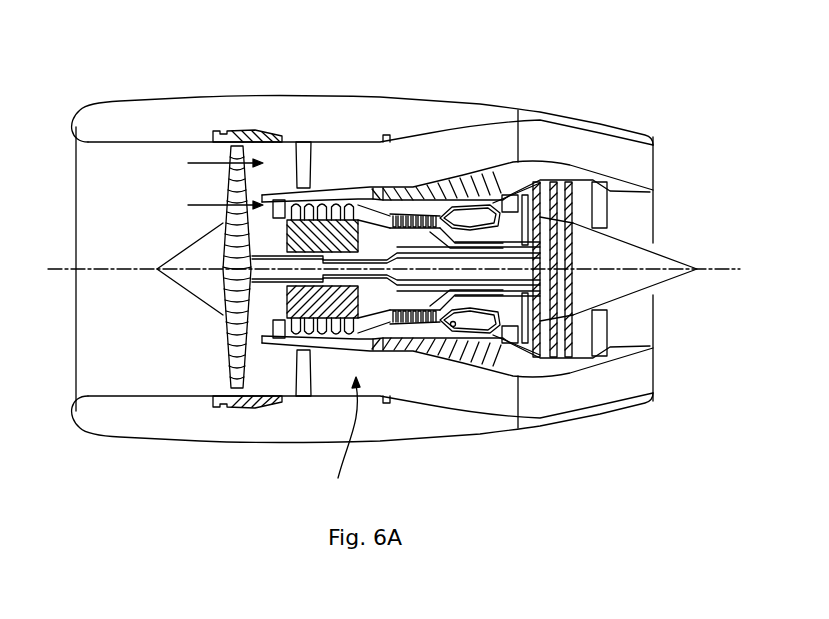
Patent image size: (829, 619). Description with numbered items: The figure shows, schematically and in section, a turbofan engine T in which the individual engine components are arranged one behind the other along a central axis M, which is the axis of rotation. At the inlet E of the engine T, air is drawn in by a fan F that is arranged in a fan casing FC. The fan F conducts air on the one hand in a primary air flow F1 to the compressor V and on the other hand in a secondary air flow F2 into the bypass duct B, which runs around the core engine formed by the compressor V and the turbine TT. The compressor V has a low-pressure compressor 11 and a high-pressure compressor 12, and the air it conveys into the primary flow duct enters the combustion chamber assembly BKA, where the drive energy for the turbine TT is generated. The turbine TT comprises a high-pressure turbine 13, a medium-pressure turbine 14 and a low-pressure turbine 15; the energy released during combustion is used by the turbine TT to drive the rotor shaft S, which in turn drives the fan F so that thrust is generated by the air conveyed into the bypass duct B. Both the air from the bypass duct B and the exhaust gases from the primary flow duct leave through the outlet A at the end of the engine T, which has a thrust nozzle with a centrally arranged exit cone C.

The engine T is at (622, 61).
The bypass duct B is at (468, 147).
The inlet E is at (88, 342).
The outlet A is at (632, 208).
The central axis M is at (708, 272).
The fan casing FC is at (243, 131).
The primary air flow F1 is at (213, 206).
The secondary air flow F2 is at (213, 163).
The fan F is at (227, 366).
The turbine TT is at (528, 163).
The low-pressure compressor 11 is at (322, 202).
The high-pressure compressor 12 is at (392, 207).
The combustion chamber BKA is at (462, 325).
The rotor shaft S is at (406, 287).
The high-pressure turbine 13 is at (533, 345).
The medium-pressure turbine 14 is at (550, 340).
The low-pressure turbine 15 is at (572, 345).
The exit cone C is at (652, 278).
The compressor V is at (347, 439).